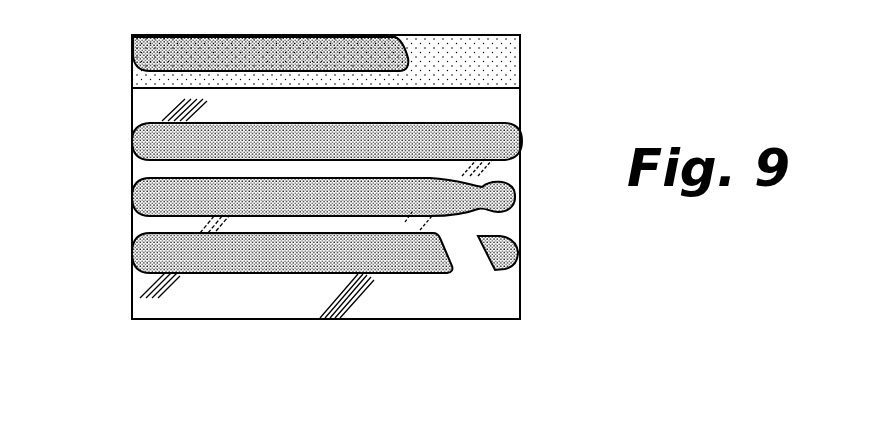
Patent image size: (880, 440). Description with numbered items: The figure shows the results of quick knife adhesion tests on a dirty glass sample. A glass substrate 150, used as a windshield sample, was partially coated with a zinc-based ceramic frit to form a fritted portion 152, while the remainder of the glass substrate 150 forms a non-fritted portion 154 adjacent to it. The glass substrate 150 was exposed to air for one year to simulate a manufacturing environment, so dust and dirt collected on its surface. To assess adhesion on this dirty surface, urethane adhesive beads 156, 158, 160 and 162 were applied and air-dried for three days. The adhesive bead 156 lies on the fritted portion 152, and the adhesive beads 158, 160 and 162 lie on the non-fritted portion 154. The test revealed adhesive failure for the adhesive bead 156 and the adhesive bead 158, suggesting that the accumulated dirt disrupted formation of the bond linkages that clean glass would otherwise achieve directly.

The glass substrate 150 is at (319, 319).
The fritted portion 152 is at (540, 32).
The non-fritted portion 154 is at (540, 108).
The adhesive bead 156 is at (132, 50).
The adhesive bead 158 is at (132, 258).
The adhesive bead 160 is at (132, 200).
The adhesive bead 162 is at (132, 135).